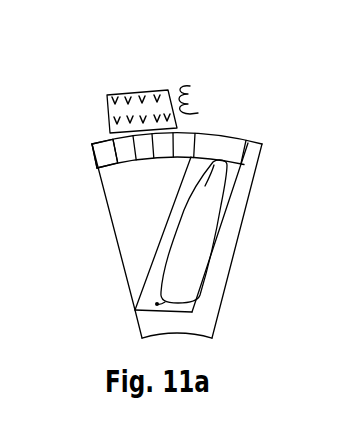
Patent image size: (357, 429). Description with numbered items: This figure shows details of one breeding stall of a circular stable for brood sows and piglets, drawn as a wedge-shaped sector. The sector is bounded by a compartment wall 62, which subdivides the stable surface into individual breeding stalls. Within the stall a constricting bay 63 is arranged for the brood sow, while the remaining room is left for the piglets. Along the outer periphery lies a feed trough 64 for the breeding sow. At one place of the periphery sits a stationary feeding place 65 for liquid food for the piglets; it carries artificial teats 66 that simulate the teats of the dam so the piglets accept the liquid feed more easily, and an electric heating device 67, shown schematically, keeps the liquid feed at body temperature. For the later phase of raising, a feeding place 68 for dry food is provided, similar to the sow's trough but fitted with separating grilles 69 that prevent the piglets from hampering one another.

The compartment wall 62 is at (231, 265).
The constricting bay 63 is at (198, 293).
The feed trough 64 is at (217, 147).
The stationary feeding place 65 is at (148, 92).
The artificial teat 66 is at (128, 100).
The electric heating device 67 is at (190, 86).
The feeding place for dry food 68 is at (136, 158).
The separating grille 69 is at (103, 153).